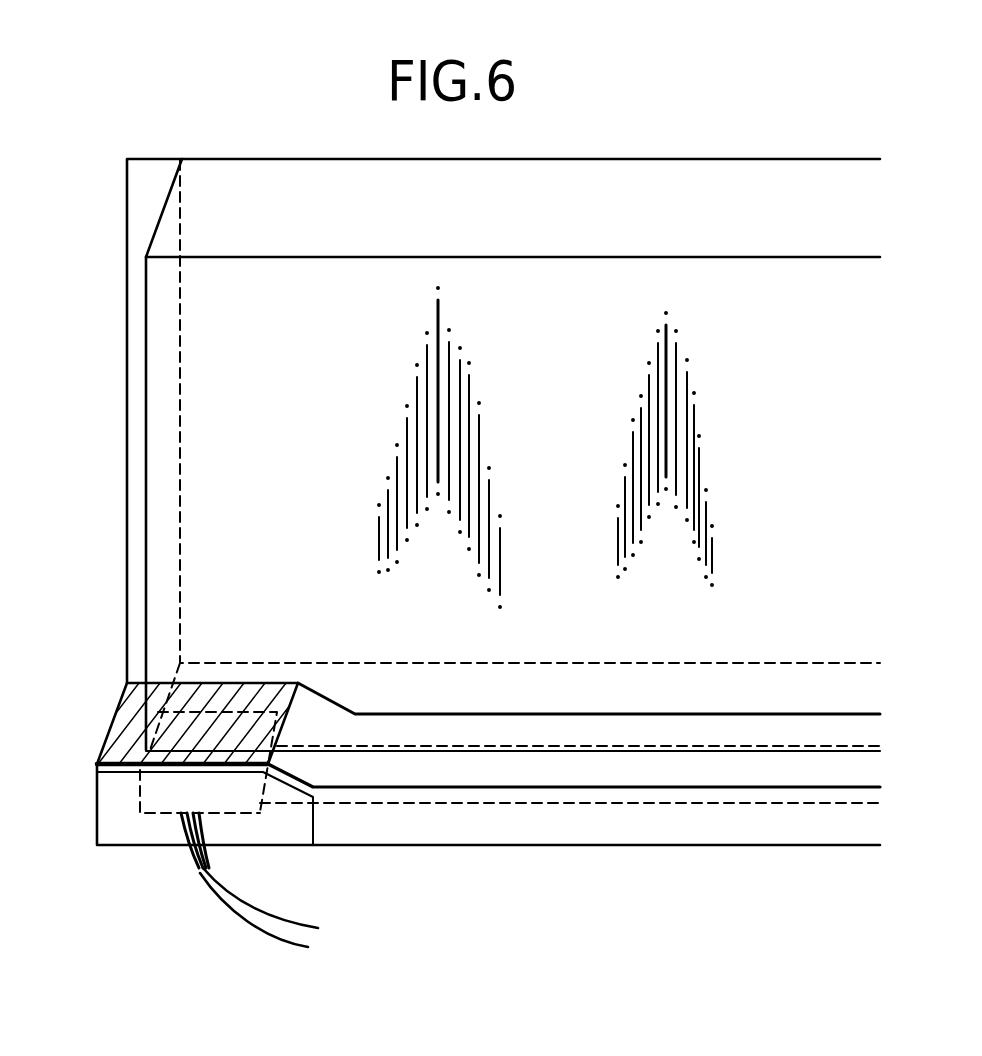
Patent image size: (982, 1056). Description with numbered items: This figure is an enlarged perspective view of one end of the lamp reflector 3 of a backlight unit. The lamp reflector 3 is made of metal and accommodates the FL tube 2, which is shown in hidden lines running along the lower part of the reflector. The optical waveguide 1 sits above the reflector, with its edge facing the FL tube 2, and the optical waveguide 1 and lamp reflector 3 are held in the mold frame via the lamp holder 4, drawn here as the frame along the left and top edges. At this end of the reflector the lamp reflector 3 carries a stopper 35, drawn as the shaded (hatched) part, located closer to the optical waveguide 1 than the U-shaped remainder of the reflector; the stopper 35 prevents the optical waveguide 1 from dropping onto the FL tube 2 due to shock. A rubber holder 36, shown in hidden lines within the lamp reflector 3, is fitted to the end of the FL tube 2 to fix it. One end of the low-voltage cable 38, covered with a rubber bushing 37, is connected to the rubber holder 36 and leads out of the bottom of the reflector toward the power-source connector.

The optical waveguide 1 is at (252, 343).
The FL tube 2 is at (475, 803).
The lamp reflector 3 is at (152, 845).
The lamp holder 4 is at (127, 483).
The stopper 35 is at (122, 685).
The rubber holder 36 is at (160, 788).
The rubber bushing 37 is at (190, 863).
The low-voltage cable 38 is at (290, 945).